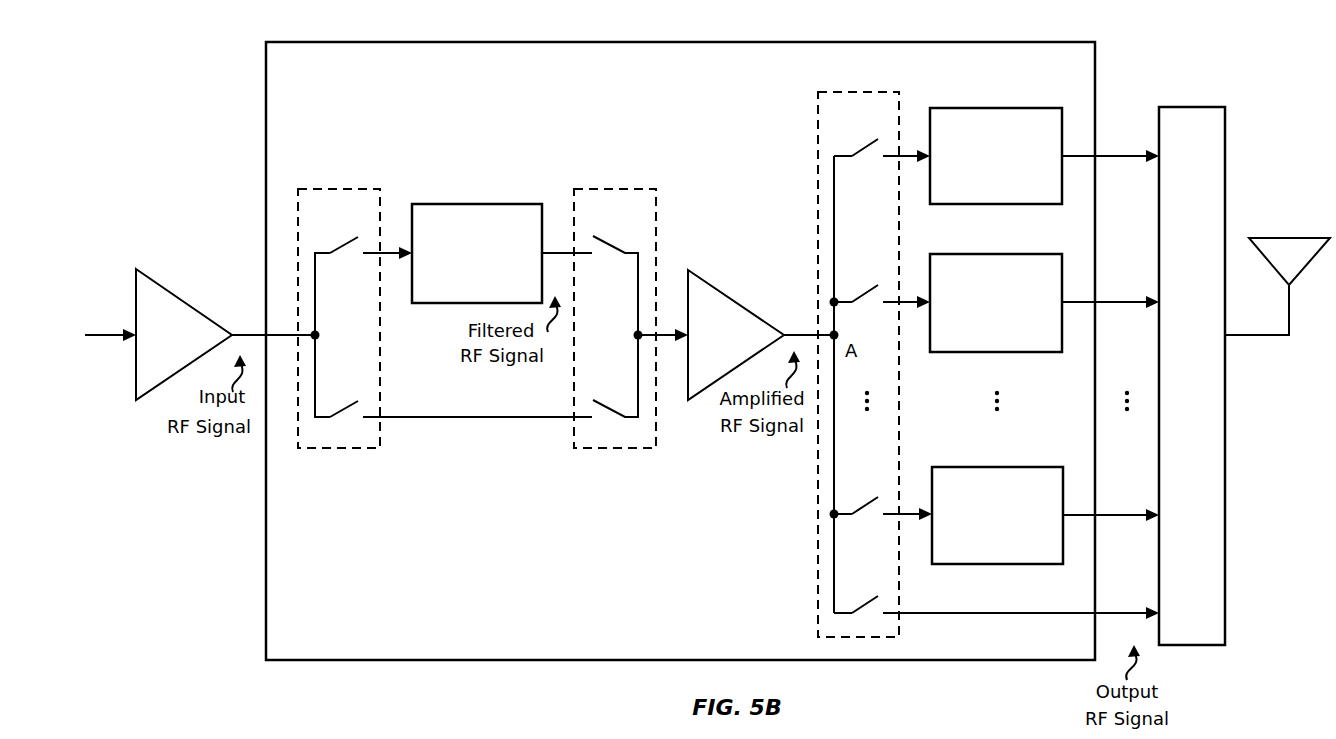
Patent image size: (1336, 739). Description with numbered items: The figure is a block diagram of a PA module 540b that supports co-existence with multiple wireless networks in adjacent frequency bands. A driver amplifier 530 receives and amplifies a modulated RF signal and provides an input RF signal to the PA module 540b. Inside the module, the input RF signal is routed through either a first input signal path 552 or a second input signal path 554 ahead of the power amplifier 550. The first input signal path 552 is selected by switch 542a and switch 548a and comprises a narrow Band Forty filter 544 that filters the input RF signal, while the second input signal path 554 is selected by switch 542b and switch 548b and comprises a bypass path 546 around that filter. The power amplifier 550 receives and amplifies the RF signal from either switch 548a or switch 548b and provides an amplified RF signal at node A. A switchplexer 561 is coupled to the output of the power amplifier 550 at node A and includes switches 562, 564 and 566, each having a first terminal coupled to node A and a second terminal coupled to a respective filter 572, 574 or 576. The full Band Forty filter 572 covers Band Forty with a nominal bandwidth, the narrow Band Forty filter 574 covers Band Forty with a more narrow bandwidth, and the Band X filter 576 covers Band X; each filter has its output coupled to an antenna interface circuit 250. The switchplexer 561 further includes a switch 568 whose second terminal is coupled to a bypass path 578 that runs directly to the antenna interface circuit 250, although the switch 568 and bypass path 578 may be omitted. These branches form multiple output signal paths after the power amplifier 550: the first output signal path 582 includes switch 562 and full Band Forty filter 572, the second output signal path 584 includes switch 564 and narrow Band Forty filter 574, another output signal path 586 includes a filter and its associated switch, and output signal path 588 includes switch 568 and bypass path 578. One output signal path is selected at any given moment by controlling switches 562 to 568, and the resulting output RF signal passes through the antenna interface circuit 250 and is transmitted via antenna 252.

The PA module 540b is at (731, 39).
The driver amplifier 530 is at (180, 297).
The switch 542a is at (336, 237).
The switch 542b is at (336, 397).
The narrow Band 40 filter 544 is at (472, 199).
The bypass path 546 is at (472, 414).
The switch 548a is at (596, 236).
The switch 548b is at (596, 397).
The power amplifier 550 is at (733, 294).
The first input signal path 552 is at (680, 246).
The second input signal path 554 is at (680, 424).
The switchplexer 561 is at (855, 87).
The switch 562 is at (856, 139).
The switch 564 is at (856, 286).
The switch 566 is at (856, 497).
The switch 568 is at (856, 596).
The full Band 40 filter 572 is at (992, 104).
The narrow Band 40 filter 574 is at (992, 250).
The Band X filter 576 is at (992, 461).
The bypass path 578 is at (992, 609).
The first output signal path 582 is at (1111, 102).
The second output signal path 584 is at (1111, 248).
The output signal path 586 is at (1111, 458).
The output signal path 588 is at (1111, 584).
The antenna interface circuit 250 is at (1188, 102).
The antenna 252 is at (1285, 234).